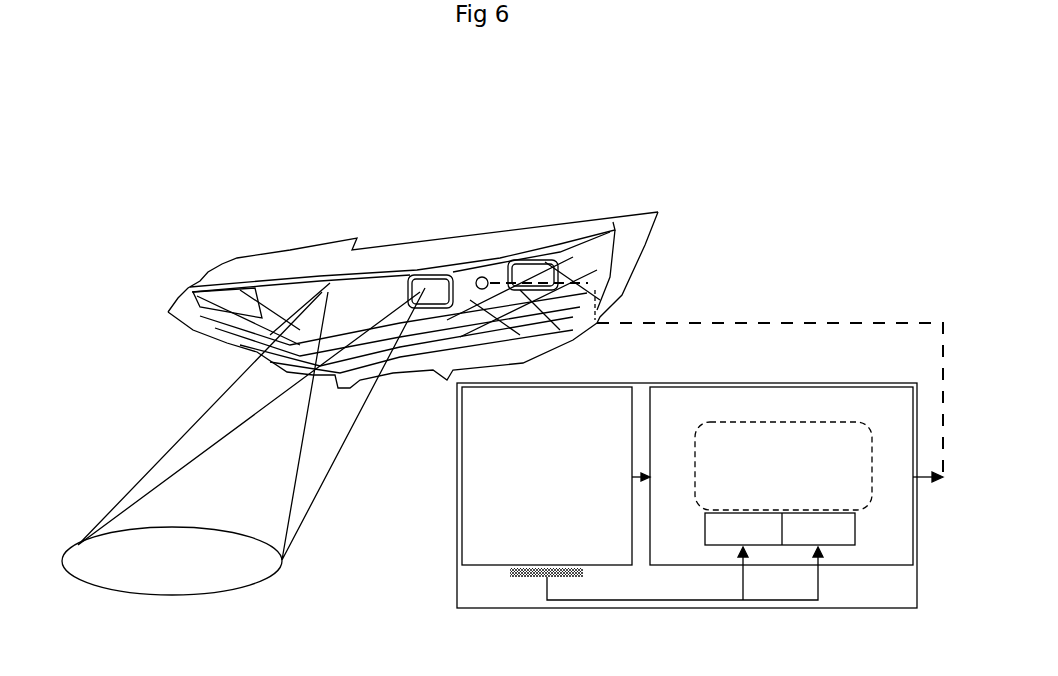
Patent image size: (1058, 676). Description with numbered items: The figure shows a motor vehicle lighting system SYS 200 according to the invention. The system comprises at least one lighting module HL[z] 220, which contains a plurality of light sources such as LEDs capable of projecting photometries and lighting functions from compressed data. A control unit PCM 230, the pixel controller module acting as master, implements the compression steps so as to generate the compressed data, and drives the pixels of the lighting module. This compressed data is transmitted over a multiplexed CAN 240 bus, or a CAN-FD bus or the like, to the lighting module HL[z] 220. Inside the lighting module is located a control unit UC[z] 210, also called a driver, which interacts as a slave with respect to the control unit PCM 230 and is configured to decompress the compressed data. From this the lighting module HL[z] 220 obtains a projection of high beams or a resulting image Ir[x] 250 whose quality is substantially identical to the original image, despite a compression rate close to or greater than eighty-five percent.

The motor vehicle lighting system SYS 200 is at (88, 249).
The control unit UC[z] 210 is at (482, 277).
The lighting module HL[z] 220 is at (425, 300).
The control unit PCM 230 is at (452, 583).
The multiplexed CAN bus 240 is at (731, 322).
The resulting image Ir[x] 250 is at (243, 441).